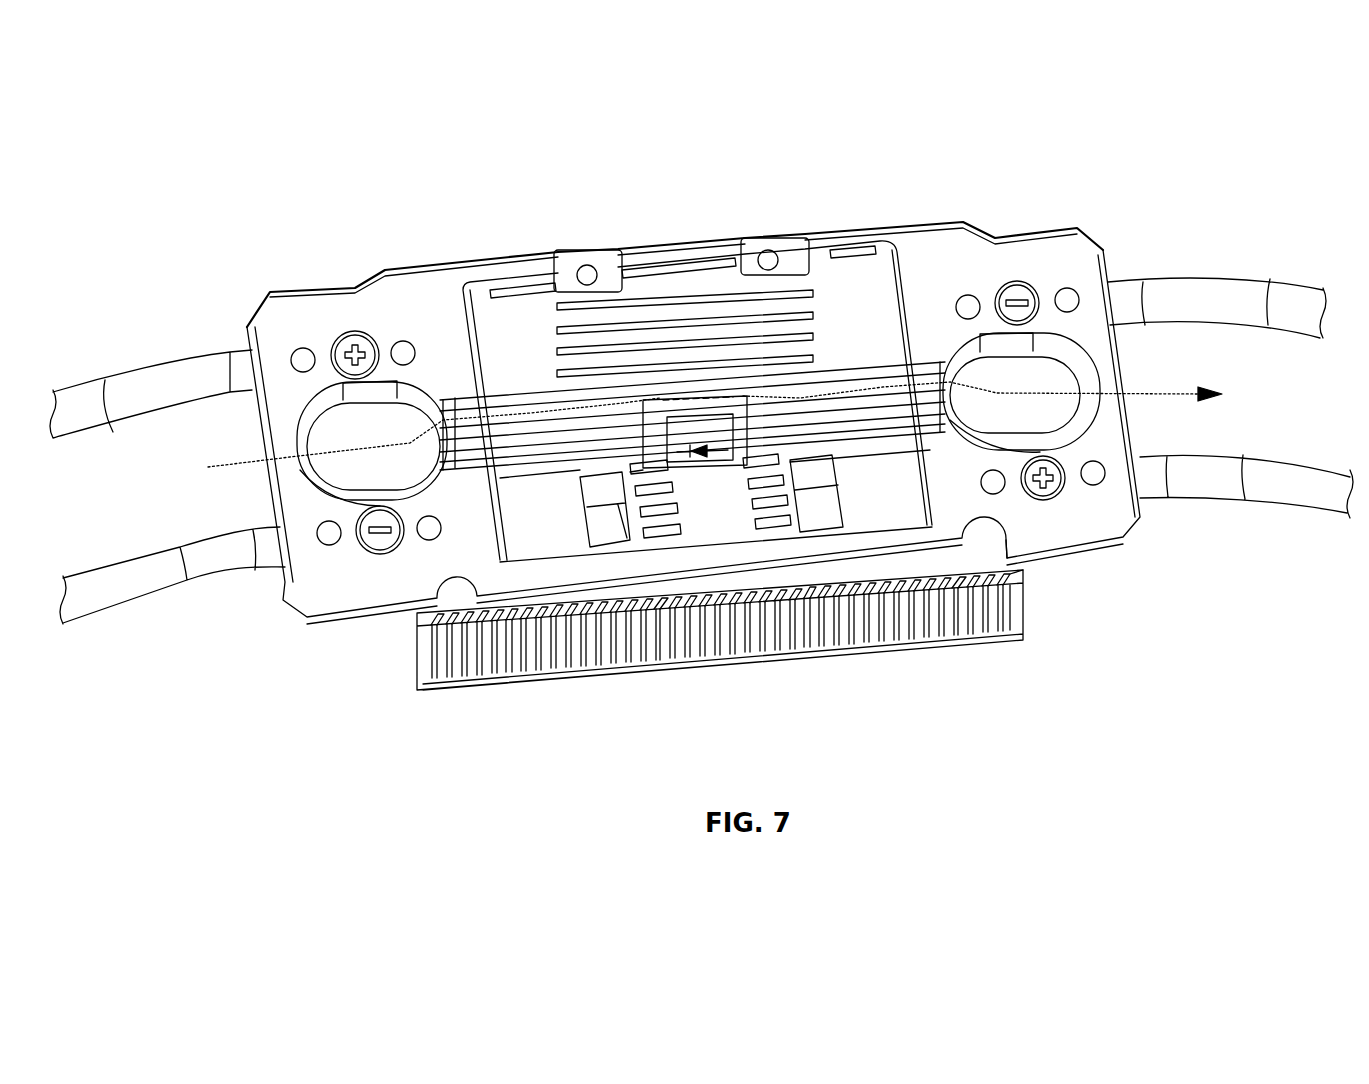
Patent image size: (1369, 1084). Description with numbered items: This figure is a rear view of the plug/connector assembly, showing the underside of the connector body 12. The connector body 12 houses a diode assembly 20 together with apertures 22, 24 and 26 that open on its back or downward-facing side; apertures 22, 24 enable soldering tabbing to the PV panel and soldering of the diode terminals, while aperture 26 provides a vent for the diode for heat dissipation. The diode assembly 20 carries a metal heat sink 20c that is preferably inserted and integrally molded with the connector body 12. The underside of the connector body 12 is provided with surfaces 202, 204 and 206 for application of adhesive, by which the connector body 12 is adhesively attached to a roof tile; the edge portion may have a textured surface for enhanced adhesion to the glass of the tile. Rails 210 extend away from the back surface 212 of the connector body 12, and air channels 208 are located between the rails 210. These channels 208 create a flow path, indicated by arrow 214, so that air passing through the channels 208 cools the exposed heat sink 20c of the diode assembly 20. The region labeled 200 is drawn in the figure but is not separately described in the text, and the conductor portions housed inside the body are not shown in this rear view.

The connector body 12 is at (683, 243).
The diode assembly 20 is at (713, 430).
The heat sink 20c is at (678, 410).
The aperture 22 is at (612, 500).
The aperture 24 is at (840, 575).
The aperture 26 is at (655, 450).
The cover ribs 200 is at (493, 305).
The adhesive application surface 202 is at (857, 283).
The adhesive application surface 204 is at (573, 530).
The adhesive application surface 206 is at (920, 585).
The air channels 208 is at (421, 688).
The rails 210 is at (483, 413).
The back surface 212 is at (722, 495).
The arrow 214 is at (236, 463).